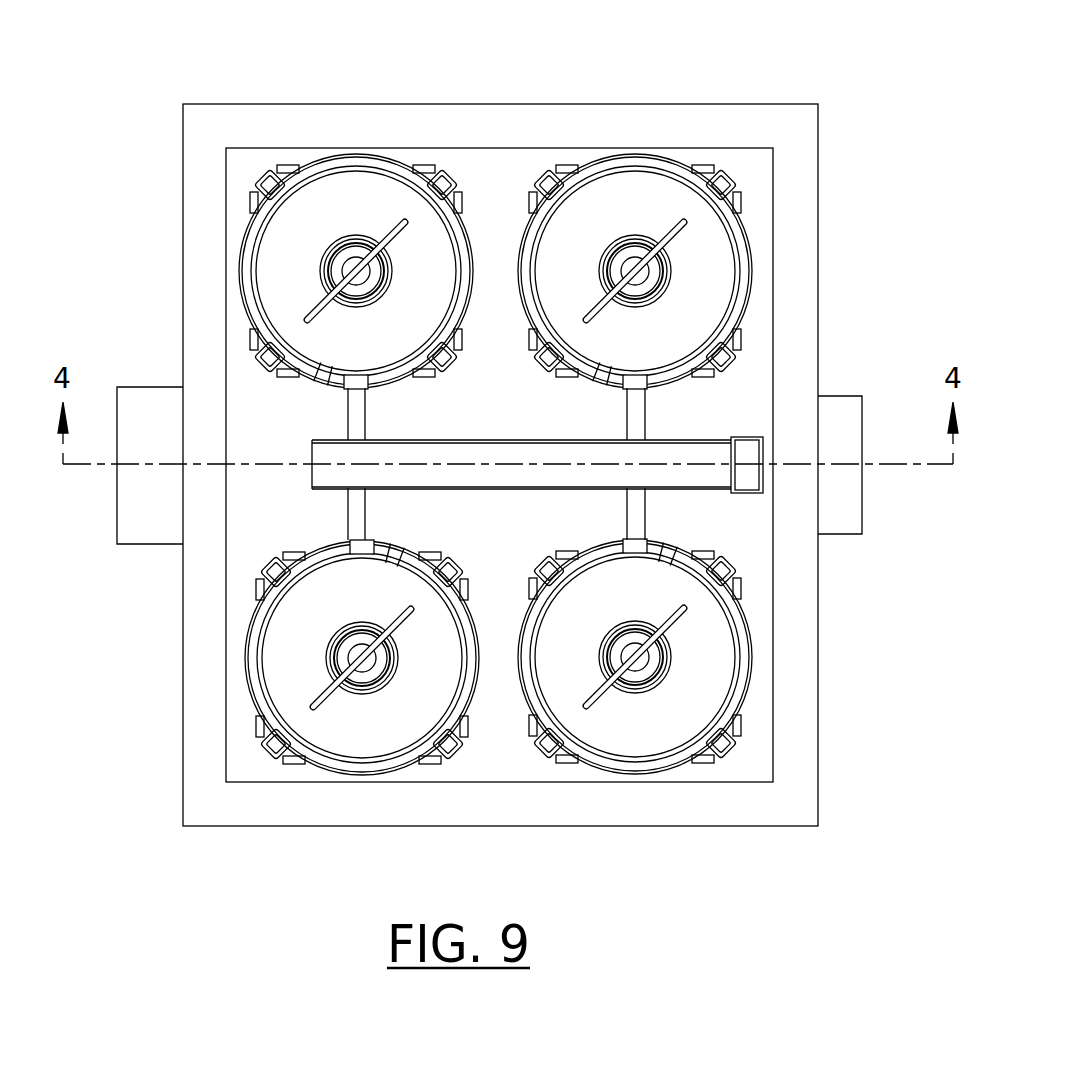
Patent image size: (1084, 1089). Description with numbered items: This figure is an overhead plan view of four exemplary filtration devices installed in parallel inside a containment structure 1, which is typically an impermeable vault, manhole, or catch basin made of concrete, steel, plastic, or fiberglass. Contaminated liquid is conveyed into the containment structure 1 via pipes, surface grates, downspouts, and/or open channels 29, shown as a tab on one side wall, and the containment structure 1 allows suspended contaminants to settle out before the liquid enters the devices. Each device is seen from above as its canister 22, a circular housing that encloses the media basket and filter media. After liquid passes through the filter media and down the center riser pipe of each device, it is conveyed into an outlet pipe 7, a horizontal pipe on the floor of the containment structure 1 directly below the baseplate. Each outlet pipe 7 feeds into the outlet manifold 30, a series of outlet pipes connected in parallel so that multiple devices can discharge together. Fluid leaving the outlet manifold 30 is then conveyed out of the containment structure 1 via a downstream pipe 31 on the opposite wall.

The containment structure 1 is at (478, 104).
The open channels 29 is at (153, 443).
The outlet manifold 30 is at (466, 461).
The downstream pipe 31 is at (835, 491).
The outlet pipe 7 is at (643, 517).
The canister 22 is at (690, 703).